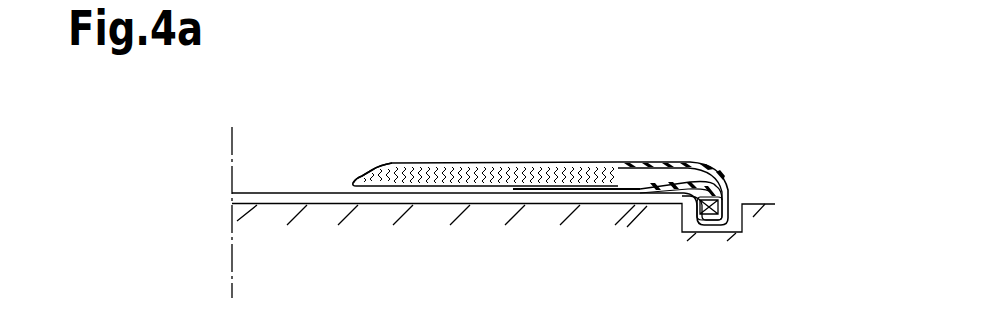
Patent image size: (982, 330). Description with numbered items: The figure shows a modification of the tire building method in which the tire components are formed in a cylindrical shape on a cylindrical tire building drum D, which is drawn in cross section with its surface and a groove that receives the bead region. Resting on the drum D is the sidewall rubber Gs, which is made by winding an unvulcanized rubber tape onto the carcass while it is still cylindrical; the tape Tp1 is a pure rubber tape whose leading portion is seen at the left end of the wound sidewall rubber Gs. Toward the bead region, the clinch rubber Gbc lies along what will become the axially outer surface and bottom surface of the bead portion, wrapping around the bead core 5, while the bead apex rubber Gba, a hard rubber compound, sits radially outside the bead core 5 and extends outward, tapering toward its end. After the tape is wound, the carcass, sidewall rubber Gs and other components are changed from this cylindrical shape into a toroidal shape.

The pure rubber tape Tp1 is at (370, 173).
The sidewall rubber Gs is at (503, 158).
The clinch rubber Gbc is at (643, 166).
The bead apex rubber Gba is at (690, 182).
The bead core 5 is at (718, 201).
The tire building drum D is at (473, 284).